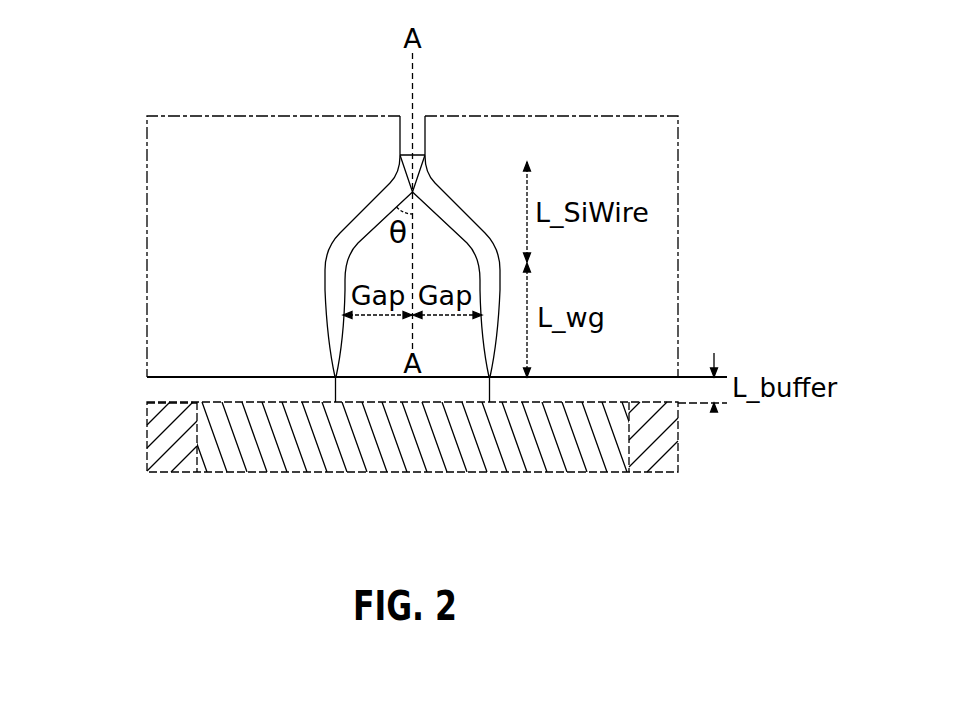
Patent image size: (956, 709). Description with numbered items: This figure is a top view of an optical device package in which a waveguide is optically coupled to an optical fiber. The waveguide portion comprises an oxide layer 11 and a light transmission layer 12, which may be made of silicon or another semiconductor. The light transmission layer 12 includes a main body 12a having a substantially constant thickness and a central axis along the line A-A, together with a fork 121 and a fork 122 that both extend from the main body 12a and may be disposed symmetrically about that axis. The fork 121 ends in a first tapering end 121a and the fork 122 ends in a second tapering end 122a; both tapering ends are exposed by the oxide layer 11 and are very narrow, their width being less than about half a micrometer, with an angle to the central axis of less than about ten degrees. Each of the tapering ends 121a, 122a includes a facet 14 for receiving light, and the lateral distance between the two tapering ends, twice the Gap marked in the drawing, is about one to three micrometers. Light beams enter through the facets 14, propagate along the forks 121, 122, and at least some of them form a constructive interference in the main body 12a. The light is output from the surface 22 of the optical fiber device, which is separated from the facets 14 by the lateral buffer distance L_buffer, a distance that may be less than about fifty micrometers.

The oxide layer 11 is at (645, 152).
The light transmission layer 12 is at (401, 286).
The main body 12a is at (419, 122).
The facet 14 is at (165, 385).
The surface 22 is at (232, 410).
The fork 121 is at (315, 346).
The first tapering end 121a is at (401, 197).
The fork 122 is at (489, 342).
The second tapering end 122a is at (490, 402).